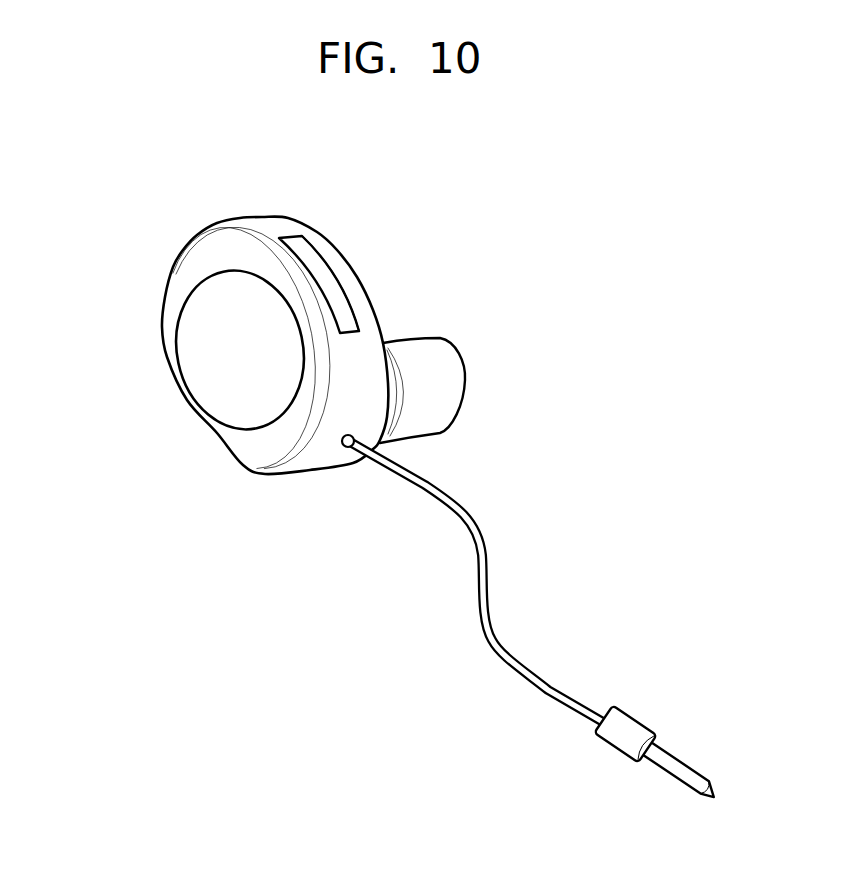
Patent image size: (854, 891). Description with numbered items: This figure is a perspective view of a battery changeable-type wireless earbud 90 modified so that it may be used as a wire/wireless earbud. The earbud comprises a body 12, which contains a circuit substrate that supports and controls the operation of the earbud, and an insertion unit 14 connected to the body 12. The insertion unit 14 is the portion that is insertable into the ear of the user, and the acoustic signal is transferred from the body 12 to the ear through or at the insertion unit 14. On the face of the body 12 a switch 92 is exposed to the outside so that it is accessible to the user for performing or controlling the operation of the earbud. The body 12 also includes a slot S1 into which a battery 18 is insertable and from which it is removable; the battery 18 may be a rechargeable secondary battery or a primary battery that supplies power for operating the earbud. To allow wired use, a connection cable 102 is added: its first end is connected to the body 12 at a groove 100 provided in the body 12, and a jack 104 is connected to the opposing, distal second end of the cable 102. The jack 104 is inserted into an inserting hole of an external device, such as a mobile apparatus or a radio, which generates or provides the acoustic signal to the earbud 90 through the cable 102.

The battery changeable-type wireless earbud 90 is at (148, 209).
The body 12 is at (173, 281).
The switch 92 is at (210, 365).
The battery 18 is at (333, 286).
The slot S1 is at (318, 246).
The insertion unit 14 is at (447, 363).
The groove 100 is at (348, 450).
The connection cable 102 is at (483, 547).
The jack 104 is at (632, 720).